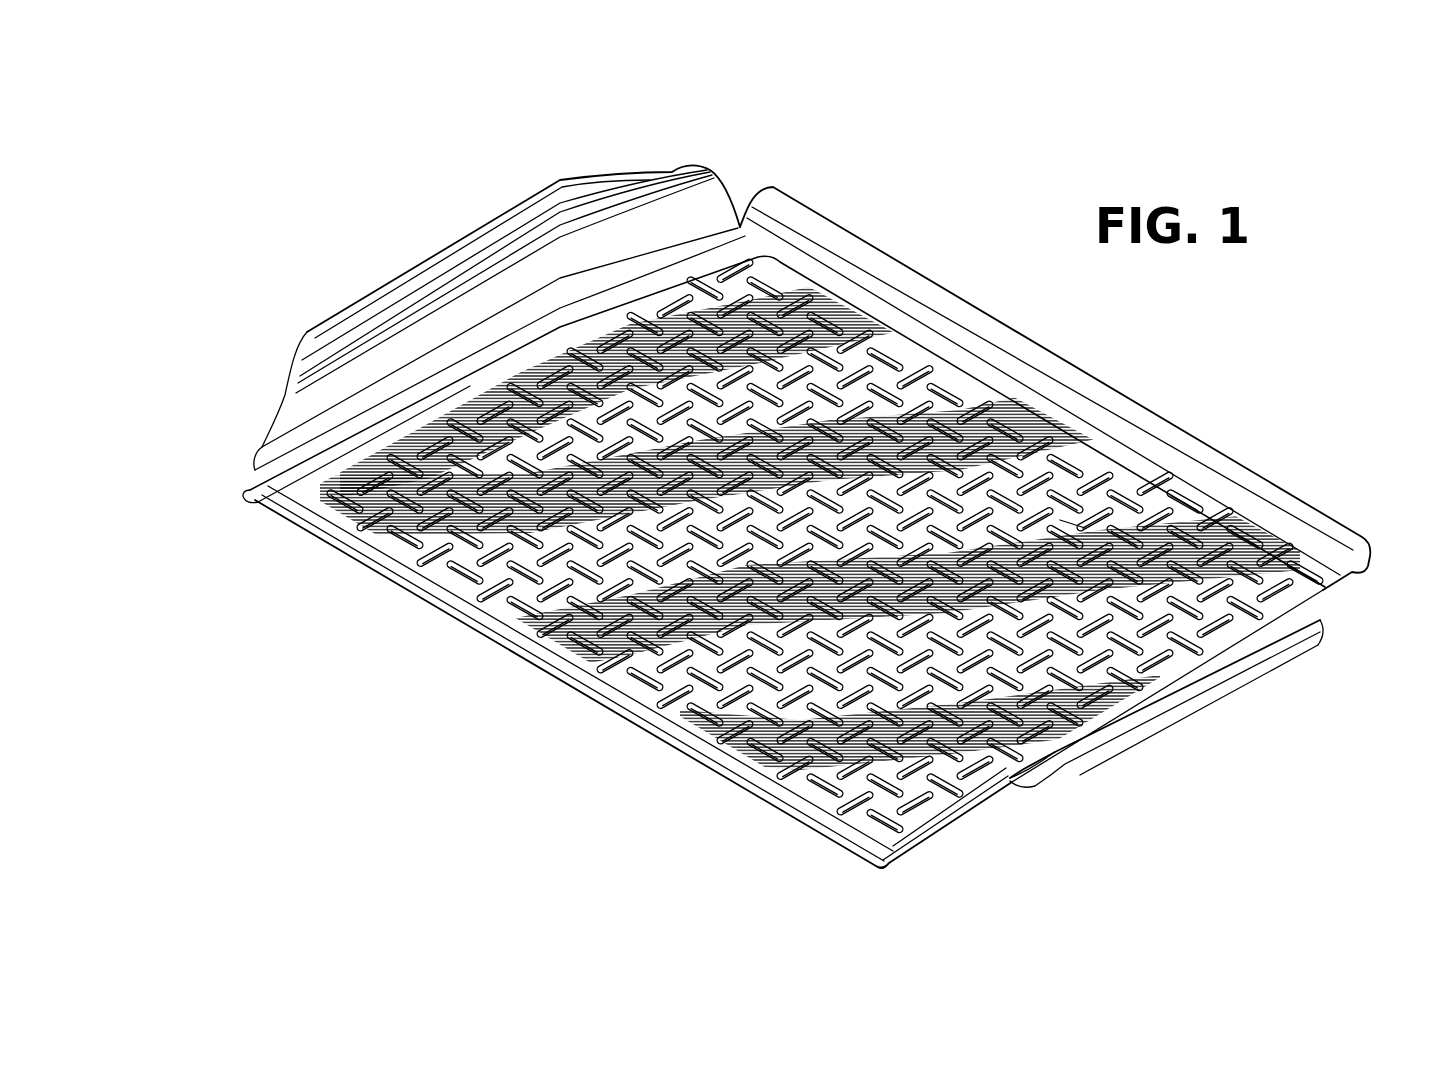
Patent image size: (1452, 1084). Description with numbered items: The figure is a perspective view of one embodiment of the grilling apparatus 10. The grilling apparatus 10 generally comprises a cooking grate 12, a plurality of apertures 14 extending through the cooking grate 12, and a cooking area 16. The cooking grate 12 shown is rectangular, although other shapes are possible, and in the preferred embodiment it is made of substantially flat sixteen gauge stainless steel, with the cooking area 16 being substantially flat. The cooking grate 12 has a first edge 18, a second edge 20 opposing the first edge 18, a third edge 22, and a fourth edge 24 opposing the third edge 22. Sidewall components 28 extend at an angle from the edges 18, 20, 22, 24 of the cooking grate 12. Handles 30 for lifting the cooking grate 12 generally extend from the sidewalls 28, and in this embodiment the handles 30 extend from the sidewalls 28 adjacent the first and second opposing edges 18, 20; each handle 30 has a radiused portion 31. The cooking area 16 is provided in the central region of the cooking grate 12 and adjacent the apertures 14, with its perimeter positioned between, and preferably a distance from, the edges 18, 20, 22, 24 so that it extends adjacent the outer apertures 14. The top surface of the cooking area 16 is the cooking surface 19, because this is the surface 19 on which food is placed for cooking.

The grilling apparatus 10 is at (1003, 148).
The cooking grate 12 is at (265, 500).
The apertures 14 is at (740, 262).
The cooking area 16 is at (492, 630).
The first edge 18 is at (322, 473).
The cooking surface 19 is at (1072, 524).
The second edge 20 is at (884, 870).
The third edge 22 is at (968, 358).
The fourth edge 24 is at (575, 690).
The sidewall components 28 is at (694, 166).
The handles 30 is at (390, 285).
The radiused portion 31 is at (292, 381).